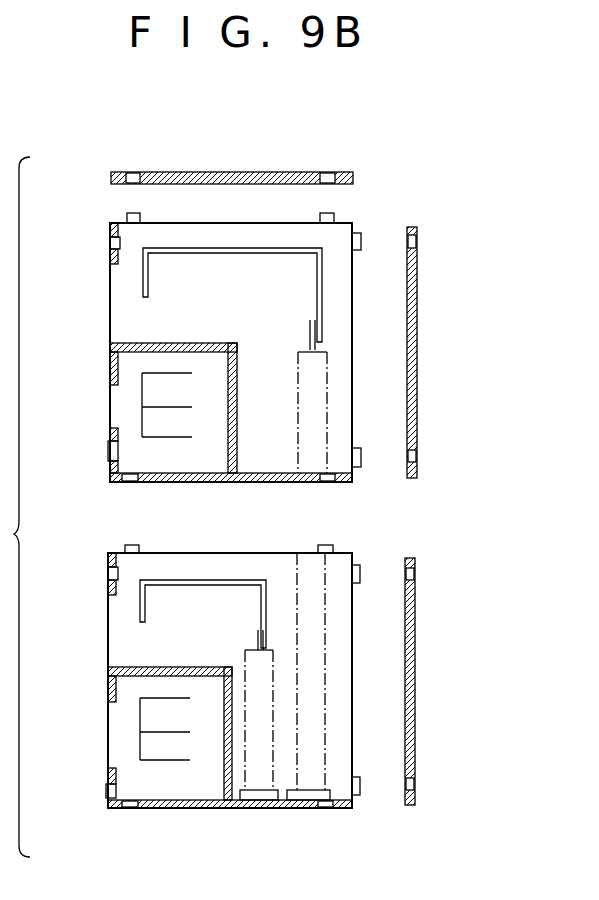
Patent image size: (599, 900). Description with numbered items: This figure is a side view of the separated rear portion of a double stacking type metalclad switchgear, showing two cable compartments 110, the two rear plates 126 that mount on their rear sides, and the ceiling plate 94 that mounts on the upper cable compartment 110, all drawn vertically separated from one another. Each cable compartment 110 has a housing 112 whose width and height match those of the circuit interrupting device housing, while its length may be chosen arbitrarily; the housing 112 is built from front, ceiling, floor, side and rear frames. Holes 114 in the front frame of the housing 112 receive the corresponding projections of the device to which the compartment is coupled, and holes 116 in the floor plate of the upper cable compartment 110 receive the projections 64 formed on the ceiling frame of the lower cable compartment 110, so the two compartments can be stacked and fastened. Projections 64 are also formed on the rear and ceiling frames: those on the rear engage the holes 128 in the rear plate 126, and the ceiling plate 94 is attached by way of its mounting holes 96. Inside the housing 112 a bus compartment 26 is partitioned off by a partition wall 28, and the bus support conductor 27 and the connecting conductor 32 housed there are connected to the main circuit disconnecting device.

The bus compartment 26 is at (198, 462).
The bus support conductor 27 is at (180, 437).
The partition wall 28 is at (237, 436).
The connecting conductor 32 is at (322, 292).
The projections 64 is at (140, 215).
The ceiling plate 94 is at (230, 172).
The holes 96 is at (131, 172).
The cable compartment 110 is at (100, 325).
The housing 112 is at (353, 383).
The holes 114 is at (110, 244).
The holes 116 is at (130, 483).
The rear plate 126 is at (417, 318).
The holes 128 is at (417, 241).